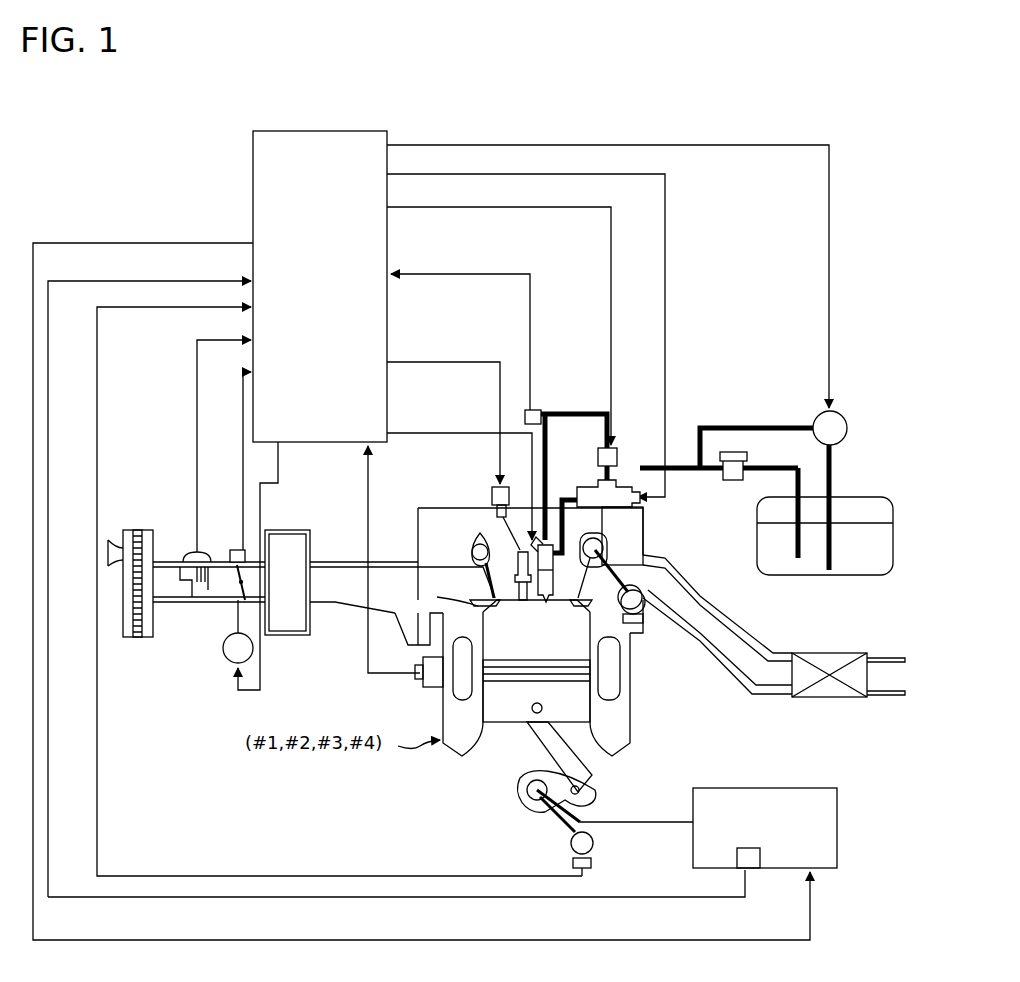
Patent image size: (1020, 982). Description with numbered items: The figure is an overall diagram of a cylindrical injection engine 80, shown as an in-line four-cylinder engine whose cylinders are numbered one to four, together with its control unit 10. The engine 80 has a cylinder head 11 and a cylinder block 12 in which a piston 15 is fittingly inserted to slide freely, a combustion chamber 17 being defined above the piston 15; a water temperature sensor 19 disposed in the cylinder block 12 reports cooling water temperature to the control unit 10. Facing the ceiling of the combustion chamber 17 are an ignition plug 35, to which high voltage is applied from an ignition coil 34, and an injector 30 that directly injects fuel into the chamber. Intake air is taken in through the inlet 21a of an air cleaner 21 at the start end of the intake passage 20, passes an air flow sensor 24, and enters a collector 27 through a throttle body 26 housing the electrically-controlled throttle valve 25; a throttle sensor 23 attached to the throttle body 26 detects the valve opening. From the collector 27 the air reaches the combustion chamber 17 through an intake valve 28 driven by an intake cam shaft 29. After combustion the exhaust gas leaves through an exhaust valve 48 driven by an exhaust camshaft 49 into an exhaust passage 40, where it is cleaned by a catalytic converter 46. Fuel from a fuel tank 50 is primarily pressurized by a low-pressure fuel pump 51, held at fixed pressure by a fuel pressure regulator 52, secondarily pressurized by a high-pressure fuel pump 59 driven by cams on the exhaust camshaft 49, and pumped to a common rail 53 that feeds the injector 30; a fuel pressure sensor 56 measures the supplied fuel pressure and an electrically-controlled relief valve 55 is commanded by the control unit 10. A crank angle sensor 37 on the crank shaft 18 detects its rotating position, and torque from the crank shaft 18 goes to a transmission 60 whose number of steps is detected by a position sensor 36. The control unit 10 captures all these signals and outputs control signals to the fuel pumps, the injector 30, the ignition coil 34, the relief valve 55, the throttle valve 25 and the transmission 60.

The control unit 10 is at (253, 162).
The cylinder head 11 is at (419, 551).
The cylinder block 12 is at (612, 745).
The piston 15 is at (503, 723).
The combustion chamber 17 is at (585, 650).
The crank shaft 18 is at (523, 795).
The water temperature sensor 19 is at (417, 675).
The intake passage 20 is at (330, 605).
The air cleaner 21 is at (140, 639).
The inlet 21a is at (113, 545).
The throttle sensor 23 is at (237, 547).
The air flow sensor 24 is at (185, 550).
The electrically-controlled throttle valve 25 is at (248, 577).
The throttle body 26 is at (201, 603).
The collector 27 is at (288, 633).
The intake valve 28 is at (430, 647).
The intake cam shaft 29 is at (471, 540).
The injector 30 is at (546, 602).
The ignition coil 34 is at (490, 487).
The ignition plug 35 is at (520, 602).
The position sensor 36 is at (749, 870).
The crank angle sensor 37 is at (595, 843).
The exhaust passage 40 is at (752, 683).
The catalytic converter 46 is at (830, 695).
The exhaust valve 48 is at (633, 625).
The exhaust camshaft 49 is at (608, 545).
The fuel tank 50 is at (855, 497).
The low-pressure fuel pump 51 is at (848, 428).
The fuel pressure regulator 52 is at (733, 482).
The common rail 53 is at (563, 491).
The electrically-controlled relief valve 55 is at (617, 446).
The fuel pressure sensor 56 is at (538, 410).
The high-pressure fuel pump 59 is at (607, 485).
The transmission 60 is at (720, 790).
The cylindrical injection engine 80 is at (365, 803).